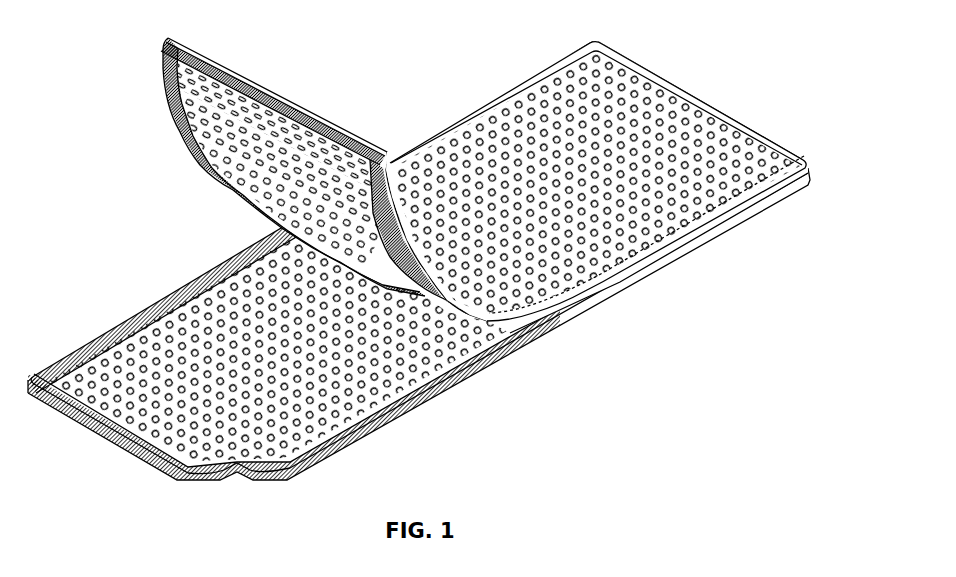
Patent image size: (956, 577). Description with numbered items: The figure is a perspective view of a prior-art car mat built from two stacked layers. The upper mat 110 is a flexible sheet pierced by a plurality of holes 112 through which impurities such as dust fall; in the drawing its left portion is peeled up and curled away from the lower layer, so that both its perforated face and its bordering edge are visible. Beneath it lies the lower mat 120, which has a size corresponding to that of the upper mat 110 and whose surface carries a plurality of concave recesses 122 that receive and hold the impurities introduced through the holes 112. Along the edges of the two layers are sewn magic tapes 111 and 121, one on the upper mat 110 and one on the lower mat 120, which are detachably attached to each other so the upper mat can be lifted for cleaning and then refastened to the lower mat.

The upper mat 110 is at (478, 288).
The magic tape 111 is at (167, 67).
The holes 112 is at (207, 244).
The lower mat 120 is at (478, 288).
The magic tape 121 is at (135, 313).
The concave recesses 122 is at (195, 313).